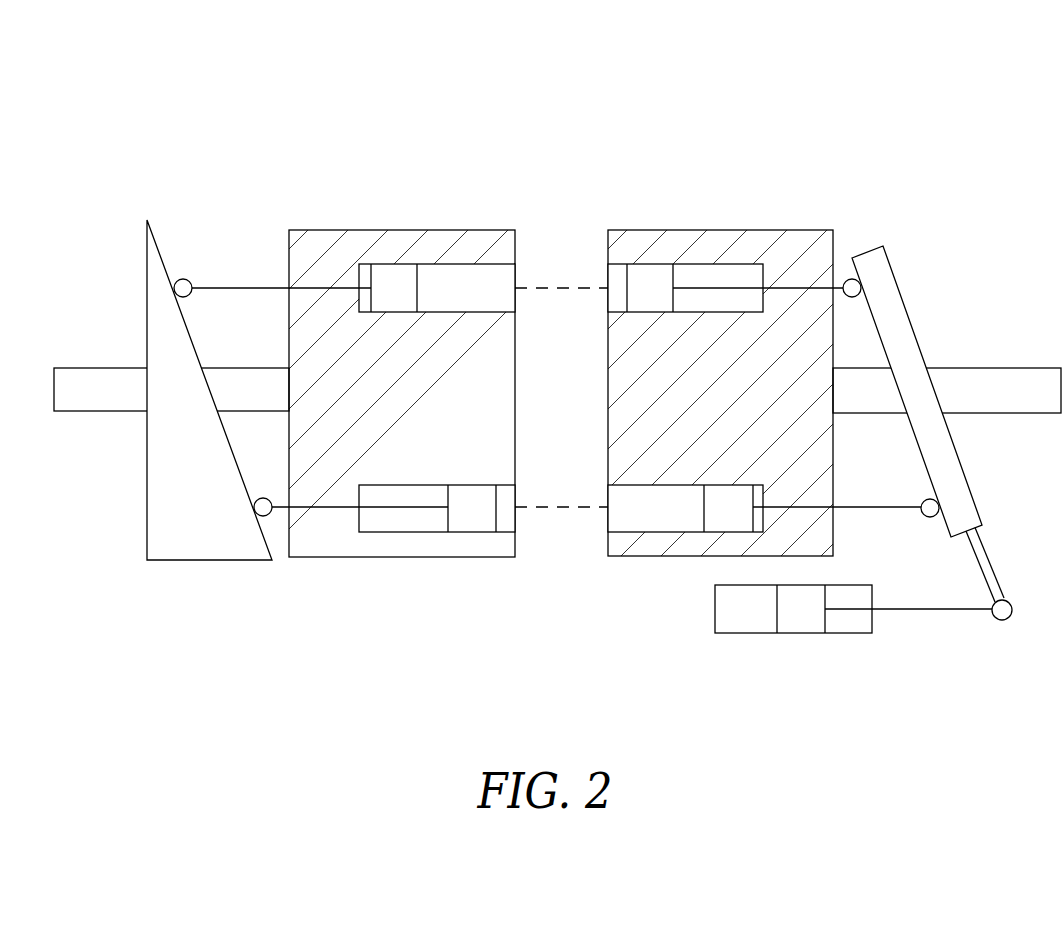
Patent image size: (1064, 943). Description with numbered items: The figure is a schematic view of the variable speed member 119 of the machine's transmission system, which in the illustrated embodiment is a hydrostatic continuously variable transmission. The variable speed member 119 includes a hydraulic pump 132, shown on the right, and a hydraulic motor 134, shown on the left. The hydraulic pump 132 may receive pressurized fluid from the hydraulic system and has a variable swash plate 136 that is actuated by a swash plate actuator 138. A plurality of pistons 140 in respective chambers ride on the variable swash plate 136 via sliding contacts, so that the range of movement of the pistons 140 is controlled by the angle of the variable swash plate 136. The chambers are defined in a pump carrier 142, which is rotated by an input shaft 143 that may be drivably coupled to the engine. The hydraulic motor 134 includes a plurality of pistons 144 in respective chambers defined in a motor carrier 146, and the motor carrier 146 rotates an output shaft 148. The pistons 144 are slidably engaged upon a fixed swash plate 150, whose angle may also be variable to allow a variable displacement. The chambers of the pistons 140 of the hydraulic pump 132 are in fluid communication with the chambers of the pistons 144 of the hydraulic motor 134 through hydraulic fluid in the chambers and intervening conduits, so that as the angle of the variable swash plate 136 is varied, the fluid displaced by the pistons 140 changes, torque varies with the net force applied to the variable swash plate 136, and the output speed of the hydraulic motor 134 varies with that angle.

The variable speed member 119 is at (660, 98).
The hydraulic pump 132 is at (993, 200).
The hydraulic motor 134 is at (128, 200).
The variable swash plate 136 is at (967, 470).
The swash plate actuator 138 is at (801, 623).
The pistons 140 is at (658, 280).
The pump carrier 142 is at (625, 557).
The input shaft 143 is at (1023, 367).
The pistons 144 is at (388, 282).
The motor carrier 146 is at (328, 557).
The output shaft 148 is at (72, 367).
The fixed swash plate 150 is at (210, 563).